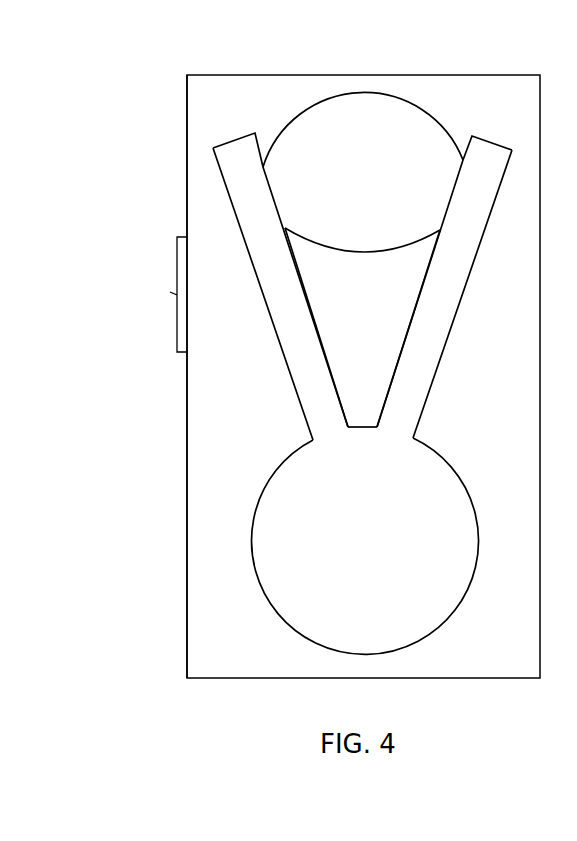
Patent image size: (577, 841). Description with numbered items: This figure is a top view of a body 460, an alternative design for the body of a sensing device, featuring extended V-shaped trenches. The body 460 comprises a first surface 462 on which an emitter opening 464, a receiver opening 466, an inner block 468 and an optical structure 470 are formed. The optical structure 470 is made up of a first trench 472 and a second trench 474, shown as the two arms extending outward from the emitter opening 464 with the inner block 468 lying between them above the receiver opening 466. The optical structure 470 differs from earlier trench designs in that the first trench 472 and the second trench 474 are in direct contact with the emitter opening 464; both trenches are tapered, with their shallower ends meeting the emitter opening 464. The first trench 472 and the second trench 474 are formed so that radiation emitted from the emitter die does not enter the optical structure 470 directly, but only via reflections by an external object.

The body 460 is at (210, 54).
The first surface 462 is at (210, 555).
The emitter opening 464 is at (392, 177).
The receiver opening 466 is at (369, 562).
The inner block 468 is at (384, 387).
The optical structure 470 is at (154, 294).
The first trench 472 is at (303, 377).
The second trench 474 is at (422, 363).